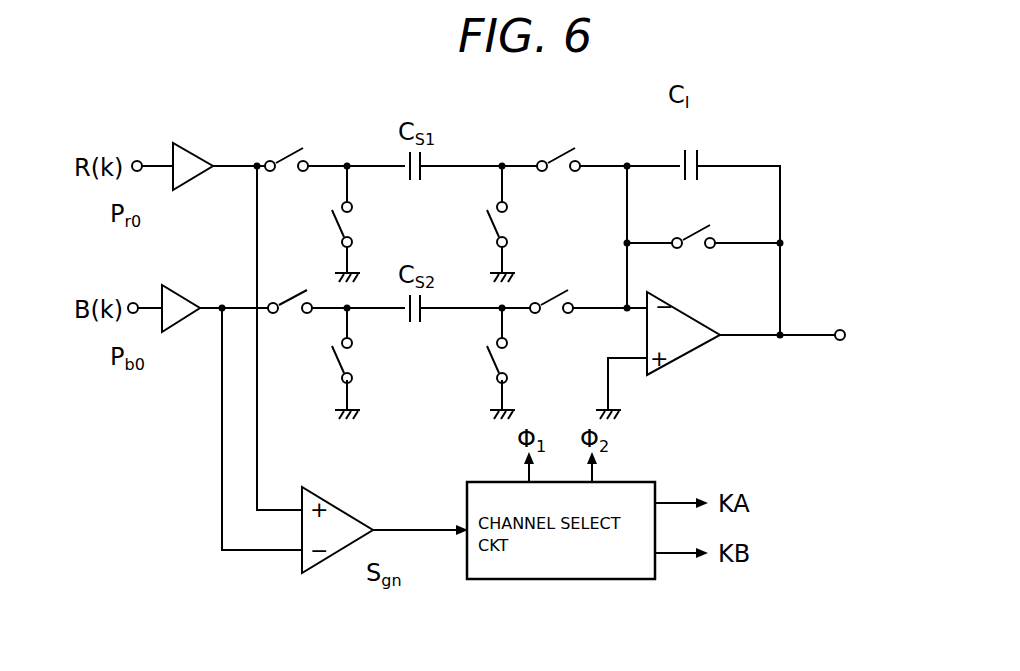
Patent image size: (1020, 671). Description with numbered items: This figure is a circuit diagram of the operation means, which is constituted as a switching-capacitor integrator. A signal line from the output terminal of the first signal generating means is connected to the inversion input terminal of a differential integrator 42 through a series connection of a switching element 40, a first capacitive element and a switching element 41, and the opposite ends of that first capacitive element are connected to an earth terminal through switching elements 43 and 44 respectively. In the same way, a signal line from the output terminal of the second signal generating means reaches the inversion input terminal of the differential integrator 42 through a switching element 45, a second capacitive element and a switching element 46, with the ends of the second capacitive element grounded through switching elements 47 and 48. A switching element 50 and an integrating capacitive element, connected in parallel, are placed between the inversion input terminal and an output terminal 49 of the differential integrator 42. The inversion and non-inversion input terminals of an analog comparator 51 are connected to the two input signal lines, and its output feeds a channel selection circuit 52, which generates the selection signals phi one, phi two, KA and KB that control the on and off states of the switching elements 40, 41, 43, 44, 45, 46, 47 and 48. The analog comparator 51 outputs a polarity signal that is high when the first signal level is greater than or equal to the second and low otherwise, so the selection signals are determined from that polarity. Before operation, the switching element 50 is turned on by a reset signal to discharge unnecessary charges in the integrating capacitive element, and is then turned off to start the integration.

The switching element 40 is at (292, 154).
The switching element 41 is at (560, 153).
The differential integrator 42 is at (692, 353).
The switching element 43 is at (348, 226).
The switching element 44 is at (503, 226).
The switching element 45 is at (290, 303).
The switching element 46 is at (555, 303).
The switching element 47 is at (348, 362).
The switching element 48 is at (503, 362).
The output terminal 49 is at (843, 330).
The switching element 50 is at (693, 246).
The analog comparator 51 is at (382, 559).
The channel selection circuit 52 is at (535, 580).